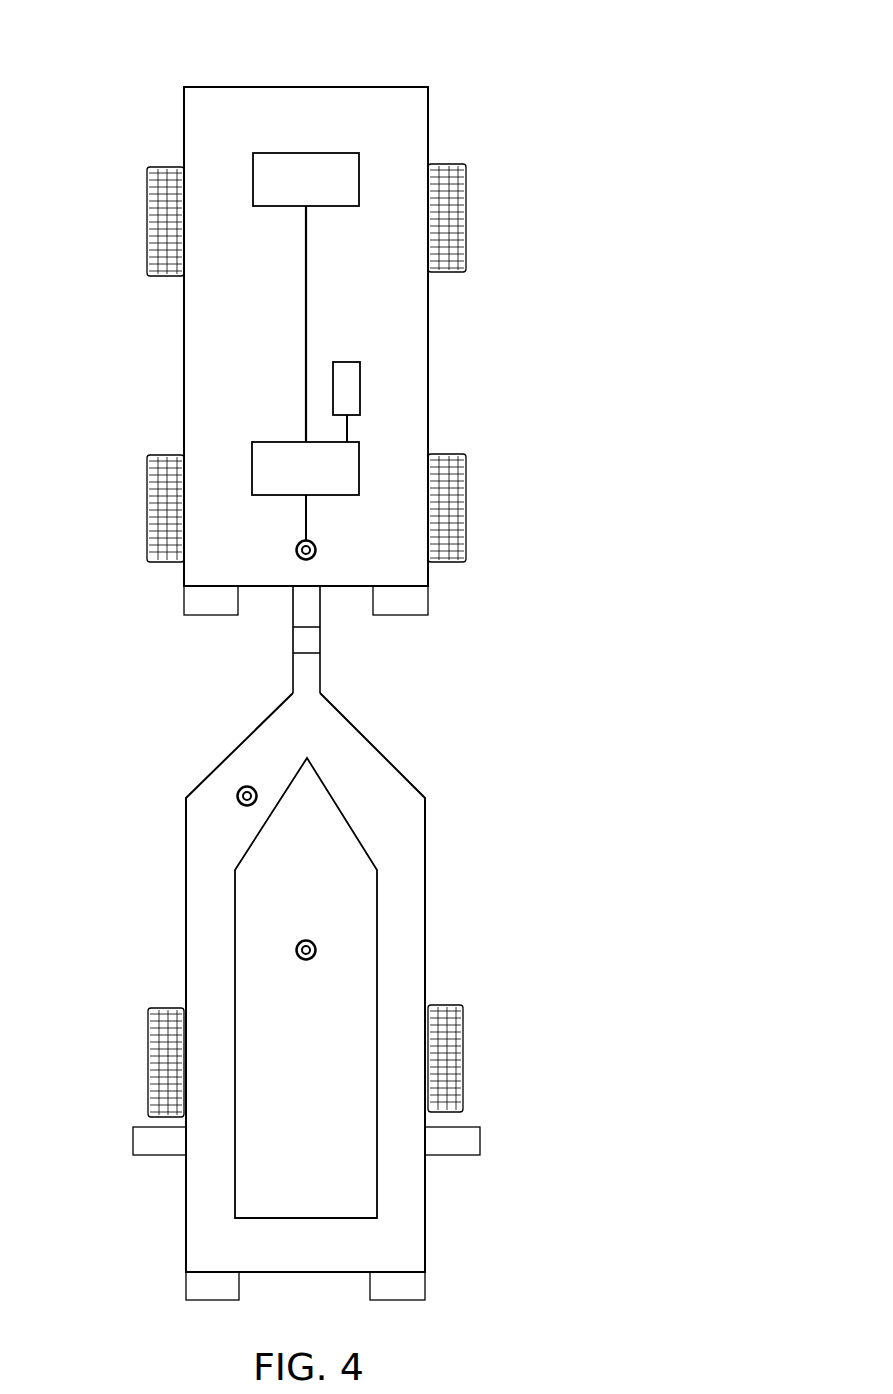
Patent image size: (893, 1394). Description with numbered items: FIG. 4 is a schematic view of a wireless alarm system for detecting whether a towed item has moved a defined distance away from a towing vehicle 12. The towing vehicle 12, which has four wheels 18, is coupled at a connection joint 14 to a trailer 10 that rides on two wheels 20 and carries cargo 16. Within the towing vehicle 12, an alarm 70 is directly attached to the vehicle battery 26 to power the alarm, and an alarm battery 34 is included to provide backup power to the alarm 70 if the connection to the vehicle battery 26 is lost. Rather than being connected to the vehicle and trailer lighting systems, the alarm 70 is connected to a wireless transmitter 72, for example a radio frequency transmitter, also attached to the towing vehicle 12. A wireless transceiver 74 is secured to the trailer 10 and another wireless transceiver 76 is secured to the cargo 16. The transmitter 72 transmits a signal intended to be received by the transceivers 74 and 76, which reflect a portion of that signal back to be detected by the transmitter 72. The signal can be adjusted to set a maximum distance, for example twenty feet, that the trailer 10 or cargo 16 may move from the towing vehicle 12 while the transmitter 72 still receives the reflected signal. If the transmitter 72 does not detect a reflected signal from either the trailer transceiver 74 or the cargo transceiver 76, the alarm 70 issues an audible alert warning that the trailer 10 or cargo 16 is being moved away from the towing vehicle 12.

The trailer 10 is at (415, 785).
The towing vehicle 12 is at (405, 93).
The connection joint 14 is at (316, 640).
The cargo (boat) 16 is at (370, 992).
The wheels 18 is at (147, 235).
The wheels 20 is at (148, 1063).
The vehicle battery 26 is at (277, 178).
The alarm battery 34 is at (348, 379).
The alarm 70 is at (265, 488).
The wireless transmitter 72 is at (300, 558).
The wireless transceiver 74 is at (238, 797).
The wireless transceiver 76 is at (317, 940).